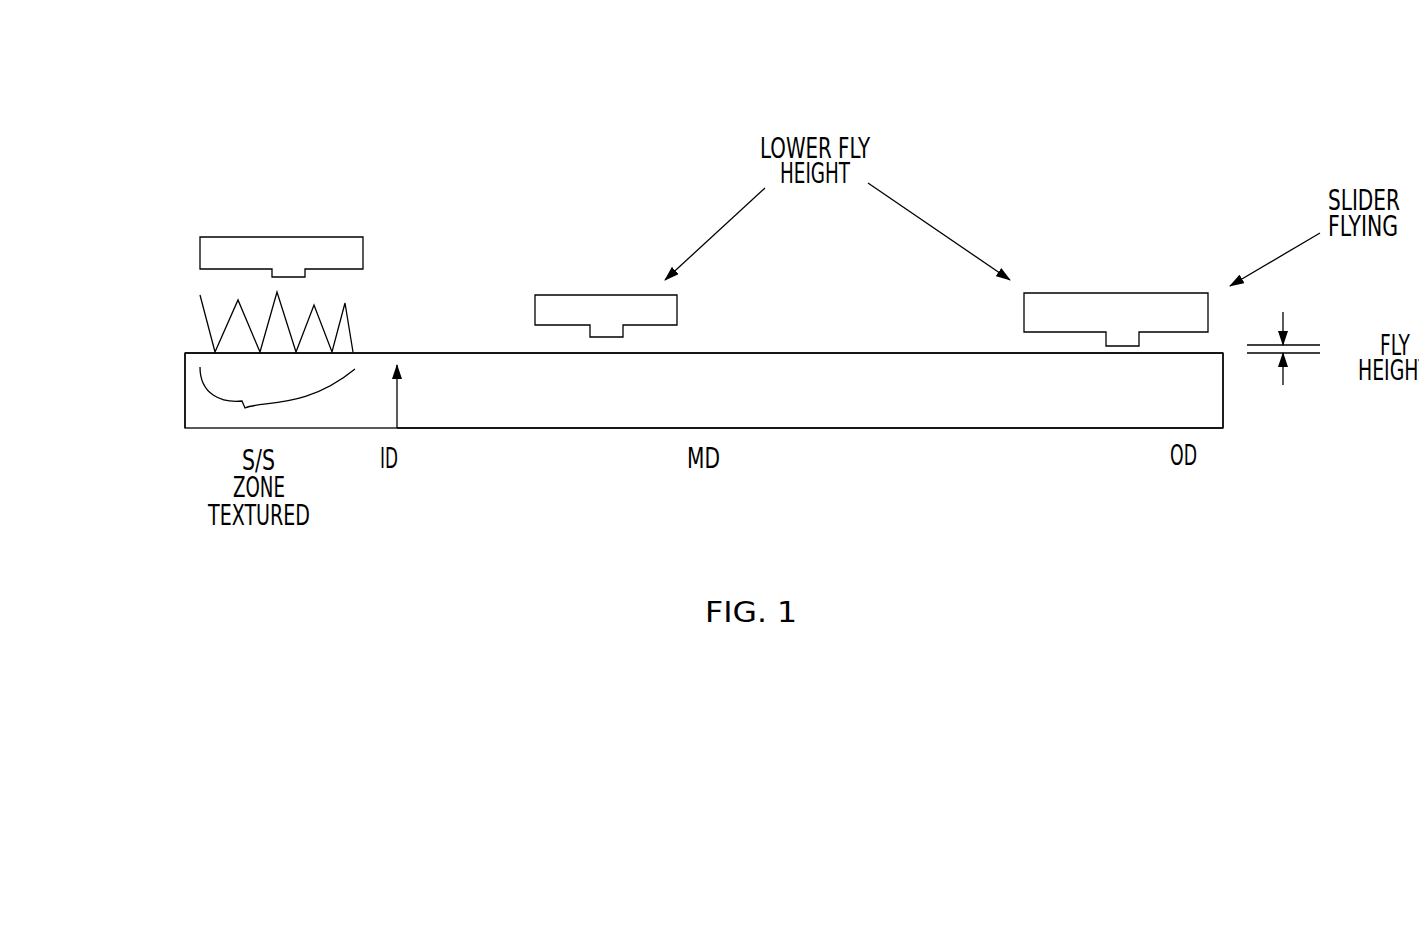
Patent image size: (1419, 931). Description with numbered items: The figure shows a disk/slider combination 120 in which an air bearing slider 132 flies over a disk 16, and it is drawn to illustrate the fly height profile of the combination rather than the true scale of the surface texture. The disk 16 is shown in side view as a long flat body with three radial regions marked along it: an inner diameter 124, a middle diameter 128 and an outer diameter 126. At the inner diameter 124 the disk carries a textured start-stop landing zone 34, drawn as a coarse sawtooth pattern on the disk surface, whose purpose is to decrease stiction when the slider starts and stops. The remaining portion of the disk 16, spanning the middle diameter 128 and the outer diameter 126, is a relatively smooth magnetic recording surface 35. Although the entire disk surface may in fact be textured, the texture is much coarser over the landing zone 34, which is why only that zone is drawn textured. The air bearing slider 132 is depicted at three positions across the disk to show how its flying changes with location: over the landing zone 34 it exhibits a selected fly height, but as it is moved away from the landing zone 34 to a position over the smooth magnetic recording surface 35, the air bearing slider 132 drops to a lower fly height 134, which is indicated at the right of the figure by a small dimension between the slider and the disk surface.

The disk 16 is at (1062, 474).
The textured start-stop landing zone 34 is at (353, 332).
The magnetic recording surface 35 is at (768, 353).
The disk/slider combination 120 is at (517, 122).
The inner diameter 124 is at (193, 415).
The outer diameter 126 is at (1208, 415).
The middle diameter 128 is at (735, 415).
The air bearing slider 132 is at (338, 247).
The lower fly height 134 is at (1328, 350).